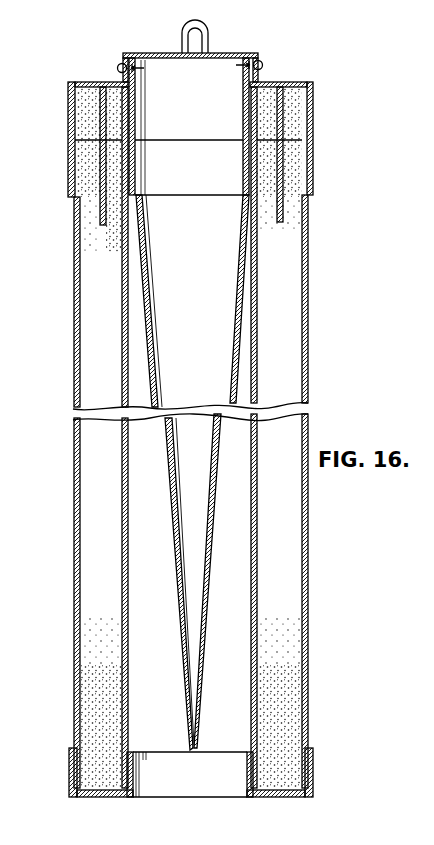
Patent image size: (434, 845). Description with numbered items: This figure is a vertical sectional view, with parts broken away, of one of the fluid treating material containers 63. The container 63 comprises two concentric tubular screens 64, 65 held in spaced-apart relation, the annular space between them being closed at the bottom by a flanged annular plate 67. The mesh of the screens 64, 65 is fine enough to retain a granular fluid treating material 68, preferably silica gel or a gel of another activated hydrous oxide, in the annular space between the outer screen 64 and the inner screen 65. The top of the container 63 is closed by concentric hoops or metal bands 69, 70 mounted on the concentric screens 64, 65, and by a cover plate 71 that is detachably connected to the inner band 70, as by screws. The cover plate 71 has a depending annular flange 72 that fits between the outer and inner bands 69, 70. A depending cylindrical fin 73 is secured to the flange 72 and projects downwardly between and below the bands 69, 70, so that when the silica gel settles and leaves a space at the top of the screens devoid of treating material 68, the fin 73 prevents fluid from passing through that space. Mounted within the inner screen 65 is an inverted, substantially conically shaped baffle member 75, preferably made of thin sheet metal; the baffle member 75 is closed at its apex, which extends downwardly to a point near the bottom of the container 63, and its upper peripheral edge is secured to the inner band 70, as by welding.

The container 63 is at (322, 322).
The outer tubular screen 64 is at (75, 353).
The inner tubular screen 65 is at (123, 353).
The flanged annular plate 67 is at (118, 798).
The granular fluid treating material 68 is at (293, 683).
The outer hoop 69 is at (71, 121).
The inner hoop 70 is at (136, 120).
The cover plate 71 is at (227, 53).
The depending annular flange 72 is at (290, 82).
The depending cylindrical fin 73 is at (313, 152).
The baffle member 75 is at (208, 553).